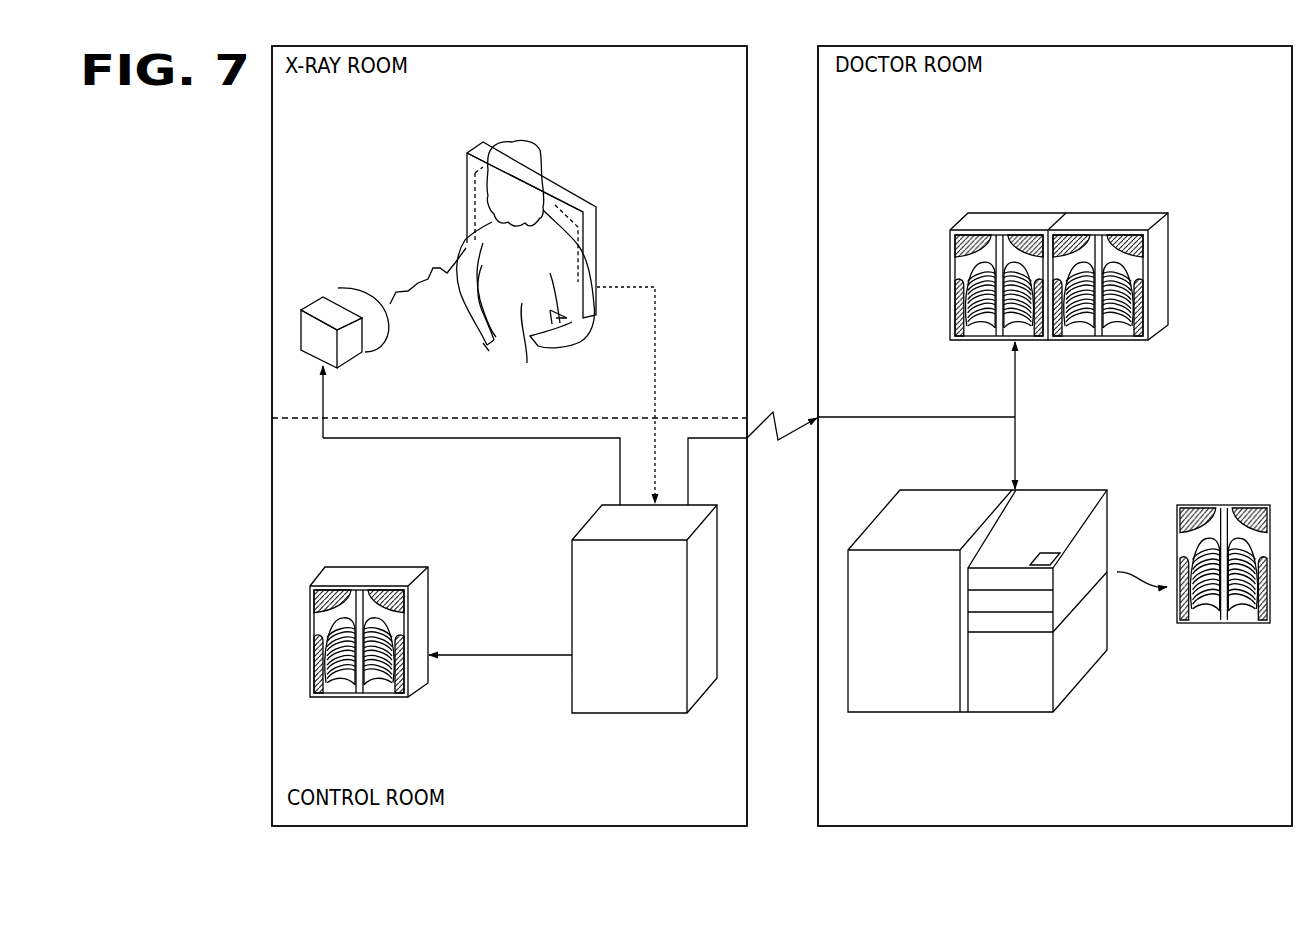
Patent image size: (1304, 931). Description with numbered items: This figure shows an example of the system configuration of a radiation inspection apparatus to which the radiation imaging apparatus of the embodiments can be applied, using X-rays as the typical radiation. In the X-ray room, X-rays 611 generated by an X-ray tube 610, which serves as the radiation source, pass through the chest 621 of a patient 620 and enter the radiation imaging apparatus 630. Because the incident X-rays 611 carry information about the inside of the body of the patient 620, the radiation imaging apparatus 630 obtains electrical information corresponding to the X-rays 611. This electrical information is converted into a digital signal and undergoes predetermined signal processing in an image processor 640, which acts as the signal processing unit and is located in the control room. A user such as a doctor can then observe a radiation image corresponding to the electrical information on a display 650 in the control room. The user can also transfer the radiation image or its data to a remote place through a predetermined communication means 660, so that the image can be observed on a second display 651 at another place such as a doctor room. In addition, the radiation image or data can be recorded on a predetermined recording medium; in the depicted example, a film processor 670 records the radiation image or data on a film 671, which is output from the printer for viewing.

The X-ray tube 610 is at (323, 300).
The X-rays 611 is at (419, 278).
The patient 620 is at (526, 249).
The chest 621 is at (520, 330).
The radiation imaging apparatus 630 is at (563, 202).
The image processor 640 is at (572, 681).
The display 650 is at (430, 607).
The display 651 is at (982, 217).
The communication means 660 is at (780, 413).
The film processor 670 is at (940, 488).
The film 671 is at (1223, 505).